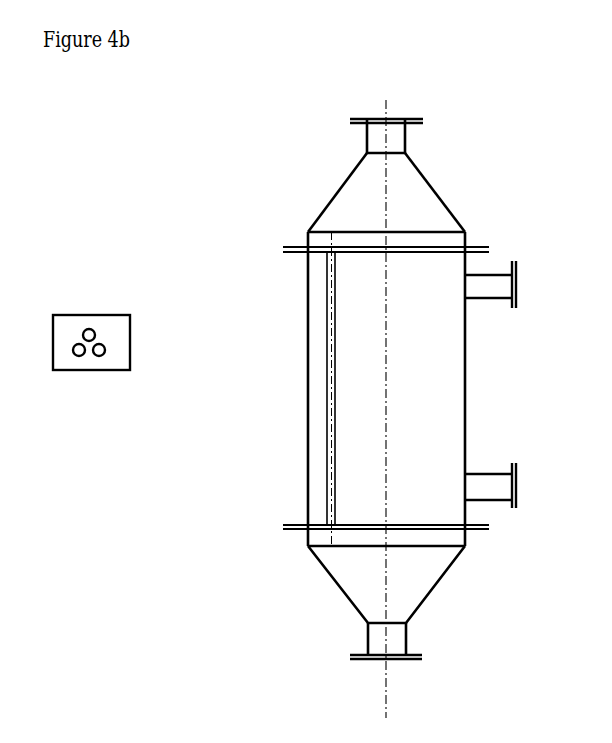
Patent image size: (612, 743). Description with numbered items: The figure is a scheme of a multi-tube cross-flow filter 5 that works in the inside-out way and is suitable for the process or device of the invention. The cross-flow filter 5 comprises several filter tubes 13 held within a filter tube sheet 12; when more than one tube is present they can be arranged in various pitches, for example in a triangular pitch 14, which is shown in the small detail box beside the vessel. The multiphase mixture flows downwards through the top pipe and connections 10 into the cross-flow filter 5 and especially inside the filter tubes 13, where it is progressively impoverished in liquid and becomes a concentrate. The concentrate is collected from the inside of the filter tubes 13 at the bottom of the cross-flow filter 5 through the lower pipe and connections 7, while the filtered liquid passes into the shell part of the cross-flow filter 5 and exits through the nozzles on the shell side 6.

The pipe and connections 10 is at (386, 114).
The cross-flow filter 5 is at (320, 213).
The filter tube sheet 12 is at (283, 248).
The nozzles on the shell side 6 is at (504, 384).
The filter tubes 13 is at (332, 427).
The triangular pitch 14 is at (325, 387).
The pipe and connections 7 is at (386, 618).